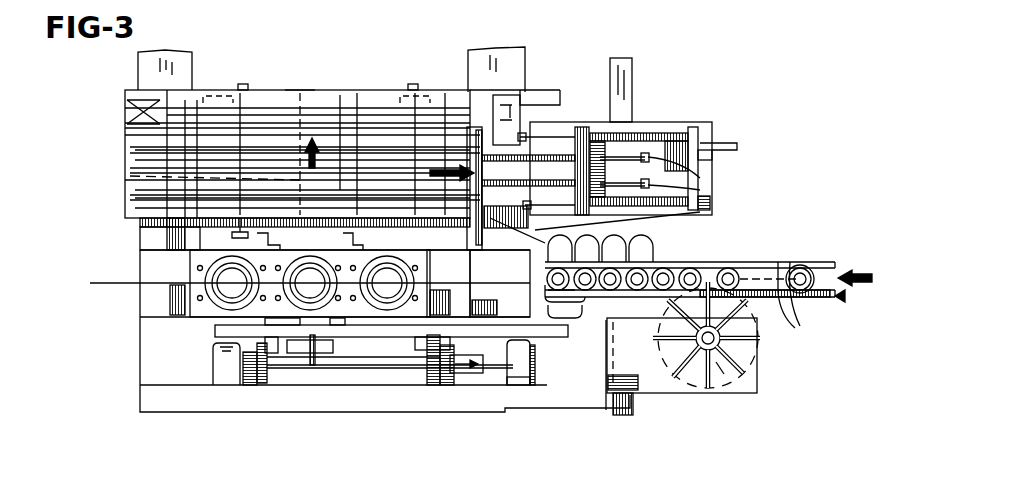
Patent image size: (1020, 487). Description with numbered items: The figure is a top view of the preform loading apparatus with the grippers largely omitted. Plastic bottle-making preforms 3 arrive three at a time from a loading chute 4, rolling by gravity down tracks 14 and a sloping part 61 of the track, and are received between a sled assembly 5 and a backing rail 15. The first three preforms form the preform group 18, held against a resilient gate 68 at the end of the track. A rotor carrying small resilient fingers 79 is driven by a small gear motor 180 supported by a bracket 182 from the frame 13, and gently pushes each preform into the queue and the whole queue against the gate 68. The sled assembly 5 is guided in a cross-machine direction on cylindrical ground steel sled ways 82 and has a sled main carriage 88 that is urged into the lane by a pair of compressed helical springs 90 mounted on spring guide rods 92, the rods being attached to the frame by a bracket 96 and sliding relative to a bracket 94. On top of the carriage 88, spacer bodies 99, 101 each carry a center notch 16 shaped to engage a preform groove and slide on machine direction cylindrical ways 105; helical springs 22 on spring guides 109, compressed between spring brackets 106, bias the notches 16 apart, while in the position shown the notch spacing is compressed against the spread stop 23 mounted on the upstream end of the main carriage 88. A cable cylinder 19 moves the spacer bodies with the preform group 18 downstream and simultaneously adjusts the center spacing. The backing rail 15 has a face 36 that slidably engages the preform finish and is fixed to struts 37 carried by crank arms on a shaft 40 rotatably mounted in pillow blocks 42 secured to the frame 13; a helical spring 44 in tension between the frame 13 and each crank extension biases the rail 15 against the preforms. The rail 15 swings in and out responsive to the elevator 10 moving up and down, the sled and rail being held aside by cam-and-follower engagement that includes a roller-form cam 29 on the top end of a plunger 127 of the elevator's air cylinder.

The preform 3 is at (726, 264).
The loading chute 4 is at (793, 246).
The sled assembly 5 is at (656, 118).
The elevator assembly 10 is at (182, 268).
The frame 13 is at (153, 63).
The tracks 14 is at (795, 310).
The backing rail 15 is at (215, 331).
The center notch 16 is at (632, 238).
The preform group 18 is at (578, 317).
The cable cylinder 19 is at (297, 90).
The helical springs 22 is at (607, 130).
The spread stop 23 is at (708, 158).
The cam 29 is at (235, 354).
The face 36 is at (500, 283).
The struts 37 is at (270, 365).
The shaft 40 is at (372, 367).
The pillow blocks 42 is at (228, 372).
The helical spring 44 is at (255, 365).
The track sloping part 61 is at (840, 297).
The resilient gate 68 is at (540, 296).
The resilient fingers 79 is at (690, 362).
The sled ways 82 is at (172, 232).
The sled main carriage 88 is at (118, 133).
The compressed helical springs 90 is at (265, 135).
The spring guide rods 92 is at (243, 84).
The bracket 94 is at (130, 176).
The bracket 96 is at (220, 90).
The spacer body 99 is at (533, 130).
The spacer body 101 is at (672, 150).
The machine direction cylindrical ways 105 is at (350, 185).
The spring bracket 106 is at (695, 200).
The spring guides 109 is at (712, 182).
The plunger 127 is at (316, 368).
The gear motor 180 is at (722, 372).
The bracket 182 is at (758, 388).